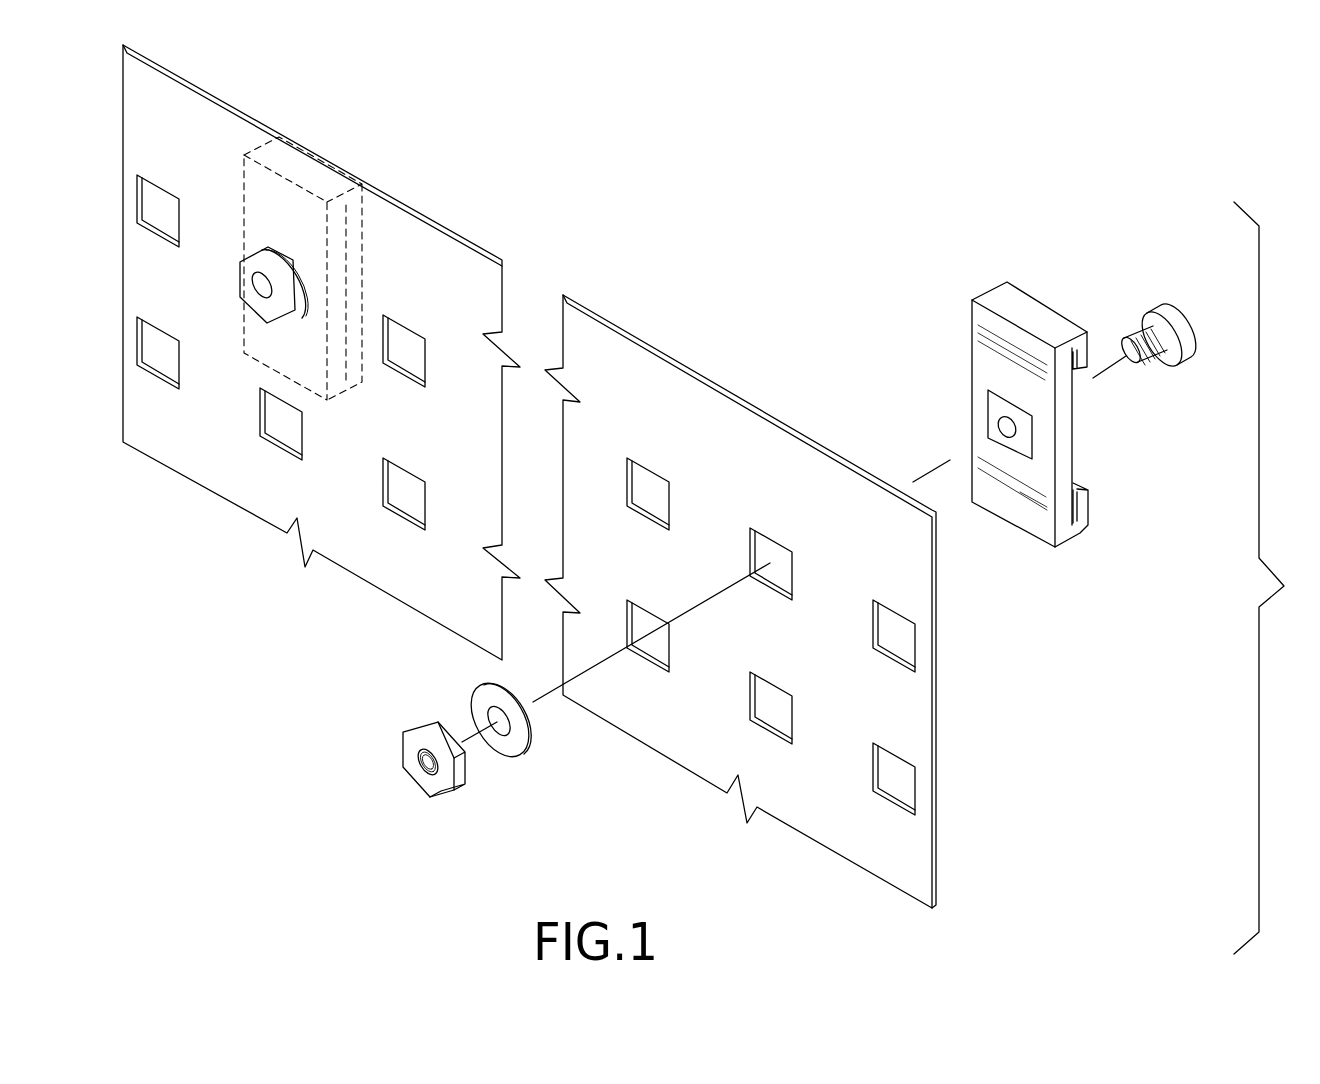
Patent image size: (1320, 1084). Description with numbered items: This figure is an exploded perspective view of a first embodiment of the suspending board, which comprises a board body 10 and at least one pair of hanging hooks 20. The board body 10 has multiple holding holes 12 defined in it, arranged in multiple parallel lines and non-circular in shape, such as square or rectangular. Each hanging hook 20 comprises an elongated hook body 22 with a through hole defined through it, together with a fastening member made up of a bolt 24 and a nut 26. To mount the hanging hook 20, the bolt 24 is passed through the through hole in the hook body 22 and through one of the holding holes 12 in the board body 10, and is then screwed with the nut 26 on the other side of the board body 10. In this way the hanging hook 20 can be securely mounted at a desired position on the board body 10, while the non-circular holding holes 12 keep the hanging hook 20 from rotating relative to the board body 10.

The board body 10 is at (772, 586).
The holding hole 12 is at (907, 637).
The hanging hook 20 is at (1038, 378).
The hook body 22 is at (966, 353).
The bolt 24 is at (1162, 304).
The nut 26 is at (410, 745).